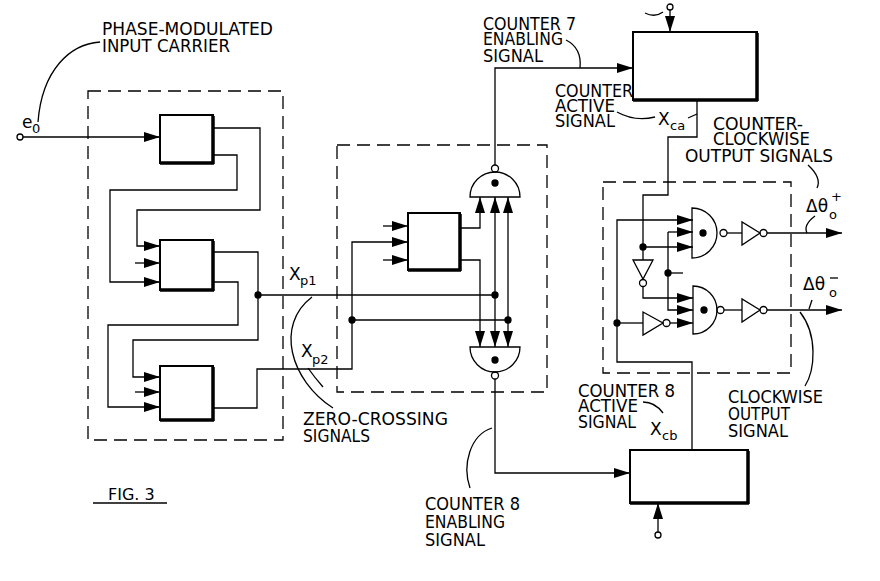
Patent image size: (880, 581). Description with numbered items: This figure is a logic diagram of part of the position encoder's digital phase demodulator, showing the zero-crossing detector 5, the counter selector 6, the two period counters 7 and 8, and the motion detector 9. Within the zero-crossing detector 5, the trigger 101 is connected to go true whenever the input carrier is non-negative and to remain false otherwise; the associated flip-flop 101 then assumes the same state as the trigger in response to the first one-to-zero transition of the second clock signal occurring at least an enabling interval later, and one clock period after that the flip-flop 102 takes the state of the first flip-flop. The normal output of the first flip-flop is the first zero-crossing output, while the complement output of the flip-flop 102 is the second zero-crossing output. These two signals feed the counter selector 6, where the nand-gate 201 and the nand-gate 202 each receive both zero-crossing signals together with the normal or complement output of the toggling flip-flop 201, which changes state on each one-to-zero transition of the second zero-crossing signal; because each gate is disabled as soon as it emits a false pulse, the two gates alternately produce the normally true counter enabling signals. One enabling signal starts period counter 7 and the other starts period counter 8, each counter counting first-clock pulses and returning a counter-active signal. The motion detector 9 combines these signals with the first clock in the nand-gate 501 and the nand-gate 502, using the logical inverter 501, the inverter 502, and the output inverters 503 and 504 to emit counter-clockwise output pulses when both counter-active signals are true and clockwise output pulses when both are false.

The zero-crossing detector 5 is at (190, 108).
The counter selector 6 is at (383, 163).
The period counter 7 is at (660, 44).
The period counter 8 is at (730, 485).
The motion detector 9 is at (622, 193).
The trigger and flip-flop 101 is at (200, 317).
The flip-flop 102 is at (311, 331).
The flip-flop and nand-gate 201 is at (485, 181).
The nand-gate 202 is at (470, 350).
The nand-gate and logical inverter 501 is at (713, 199).
The nand-gate 502 is at (723, 347).
The inverter A503 503 is at (752, 232).
The inverter A504 504 is at (748, 300).